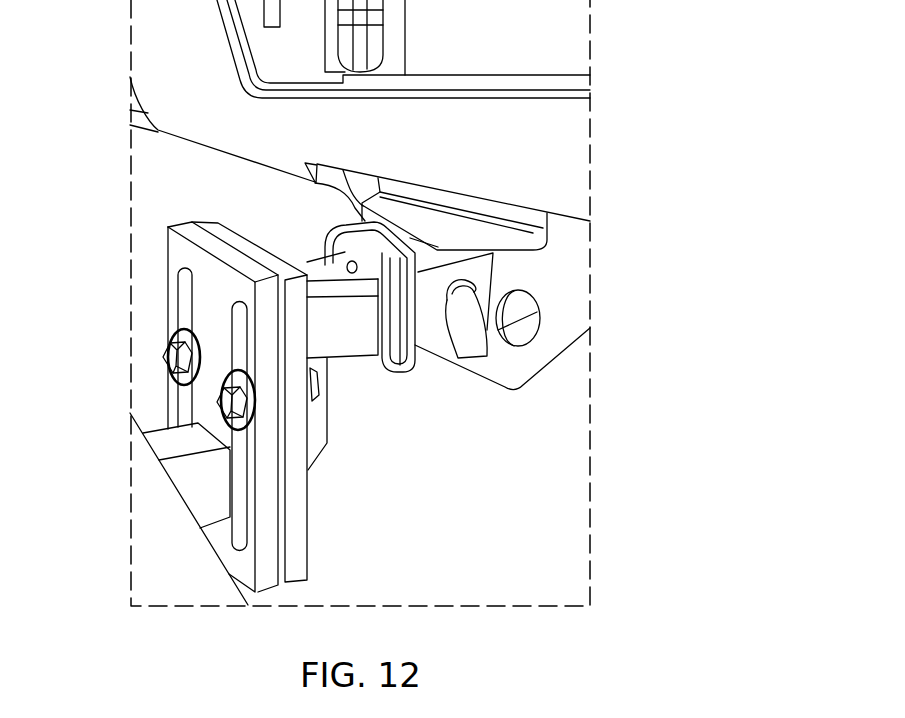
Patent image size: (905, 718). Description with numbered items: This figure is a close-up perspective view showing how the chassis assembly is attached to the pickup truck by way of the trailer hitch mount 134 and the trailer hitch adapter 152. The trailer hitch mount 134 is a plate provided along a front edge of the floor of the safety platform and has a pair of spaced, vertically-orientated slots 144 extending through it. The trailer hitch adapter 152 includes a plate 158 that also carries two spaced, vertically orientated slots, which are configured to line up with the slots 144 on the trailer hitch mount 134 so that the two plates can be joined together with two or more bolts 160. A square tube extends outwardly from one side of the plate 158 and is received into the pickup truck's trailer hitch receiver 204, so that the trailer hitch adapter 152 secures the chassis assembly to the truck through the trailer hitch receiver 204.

The trailer hitch mount 134 is at (170, 238).
The slots 144 is at (233, 315).
The bolts 160 is at (220, 408).
The trailer hitch adapter 152 is at (325, 328).
The trailer hitch receiver 204 is at (427, 332).
The plate 158 is at (300, 542).